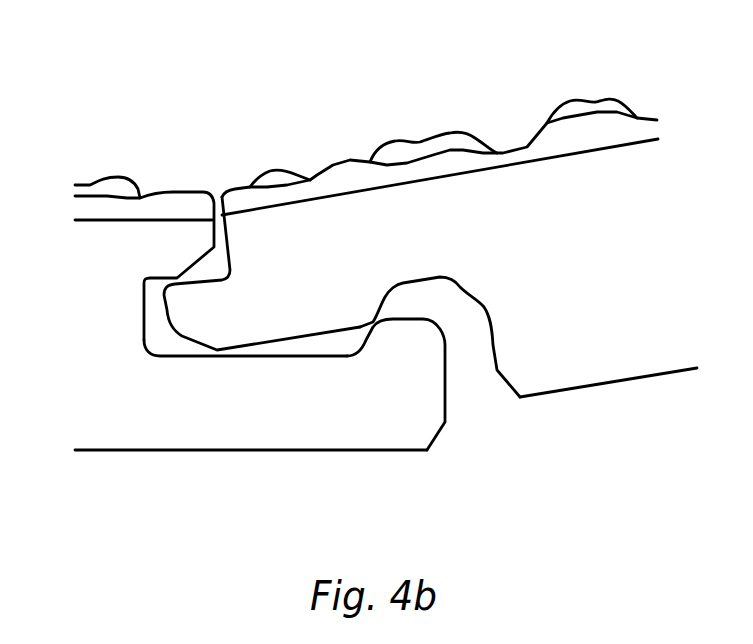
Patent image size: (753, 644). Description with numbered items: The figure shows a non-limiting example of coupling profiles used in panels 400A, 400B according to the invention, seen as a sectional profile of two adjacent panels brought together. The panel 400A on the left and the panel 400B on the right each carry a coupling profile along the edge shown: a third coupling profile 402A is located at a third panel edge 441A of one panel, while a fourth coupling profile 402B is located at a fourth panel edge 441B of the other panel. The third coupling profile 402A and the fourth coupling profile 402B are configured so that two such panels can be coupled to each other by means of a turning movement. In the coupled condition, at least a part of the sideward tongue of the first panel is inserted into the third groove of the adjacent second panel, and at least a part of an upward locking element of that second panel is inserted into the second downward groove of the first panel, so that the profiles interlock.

The panel 400A is at (104, 152).
The panel 400B is at (416, 117).
The third coupling profile 402A is at (196, 474).
The fourth coupling profile 402B is at (641, 391).
The third panel edge 441A is at (397, 415).
The fourth panel edge 441B is at (545, 370).